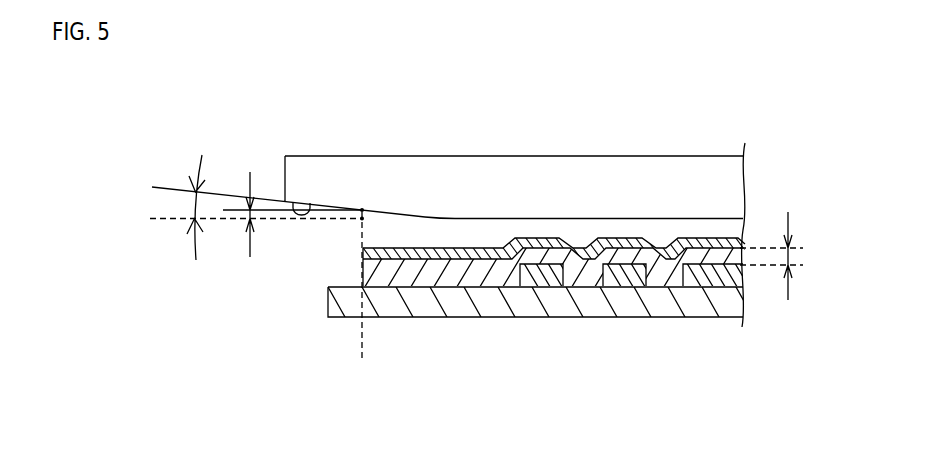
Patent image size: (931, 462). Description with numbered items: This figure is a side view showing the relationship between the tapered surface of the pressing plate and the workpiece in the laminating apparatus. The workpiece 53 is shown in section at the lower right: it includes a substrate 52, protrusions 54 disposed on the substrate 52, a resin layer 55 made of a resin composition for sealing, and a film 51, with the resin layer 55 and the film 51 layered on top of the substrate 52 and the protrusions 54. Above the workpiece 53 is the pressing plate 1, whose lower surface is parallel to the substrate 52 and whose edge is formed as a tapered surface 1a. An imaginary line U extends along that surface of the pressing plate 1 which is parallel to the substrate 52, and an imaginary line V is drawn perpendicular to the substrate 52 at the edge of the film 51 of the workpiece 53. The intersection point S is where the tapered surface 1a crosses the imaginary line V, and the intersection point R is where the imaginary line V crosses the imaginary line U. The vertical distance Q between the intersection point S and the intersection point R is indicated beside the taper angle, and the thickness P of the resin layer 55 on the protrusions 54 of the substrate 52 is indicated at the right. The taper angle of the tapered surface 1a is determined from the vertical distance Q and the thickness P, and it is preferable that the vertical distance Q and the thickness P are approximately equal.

The pressing plate 1 is at (607, 173).
The tapered surface 1a is at (305, 203).
The film 51 is at (426, 253).
The substrate 52 is at (563, 303).
The workpiece 53 is at (290, 333).
The protrusions 54 is at (630, 278).
The resin layer 55 is at (488, 276).
The intersection point S is at (362, 210).
The intersection point R is at (362, 219).
The imaginary line U is at (160, 218).
The imaginary line V is at (362, 335).
The vertical distance Q is at (241, 226).
The thickness P is at (779, 251).